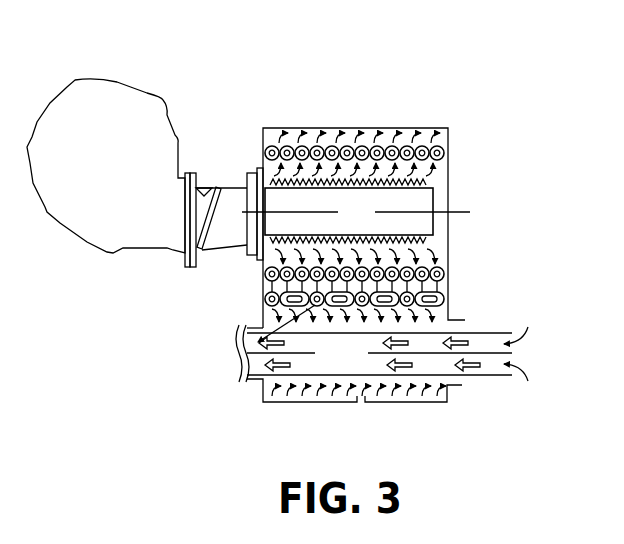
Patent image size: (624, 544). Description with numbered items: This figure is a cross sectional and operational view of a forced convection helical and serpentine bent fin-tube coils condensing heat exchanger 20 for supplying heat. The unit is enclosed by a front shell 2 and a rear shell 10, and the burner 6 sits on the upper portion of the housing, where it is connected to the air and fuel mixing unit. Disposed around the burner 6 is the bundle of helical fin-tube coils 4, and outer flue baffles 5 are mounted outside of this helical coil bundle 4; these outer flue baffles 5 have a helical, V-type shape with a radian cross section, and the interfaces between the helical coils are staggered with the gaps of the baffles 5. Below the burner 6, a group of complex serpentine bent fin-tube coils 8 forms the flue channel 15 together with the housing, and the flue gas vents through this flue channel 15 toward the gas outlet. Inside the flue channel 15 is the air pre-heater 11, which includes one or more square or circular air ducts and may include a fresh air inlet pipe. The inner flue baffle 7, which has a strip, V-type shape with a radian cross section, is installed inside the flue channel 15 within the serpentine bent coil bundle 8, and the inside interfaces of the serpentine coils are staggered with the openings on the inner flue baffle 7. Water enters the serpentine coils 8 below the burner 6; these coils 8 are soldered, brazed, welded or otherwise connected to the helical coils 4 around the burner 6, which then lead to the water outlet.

The heat exchanger 20 is at (444, 46).
The front shell 2 is at (272, 128).
The bundle of helical fin-tube coils 4 is at (335, 128).
The outer flue baffle 5 is at (397, 128).
The burner 6 is at (383, 203).
The inner flue baffle 7 is at (425, 303).
The plurality of complex serpentine bent fin-tube coils 8 is at (265, 311).
The rear shell 10 is at (448, 284).
The air pre-heater 11 is at (350, 357).
The cylindrical flue channel 15 is at (248, 349).